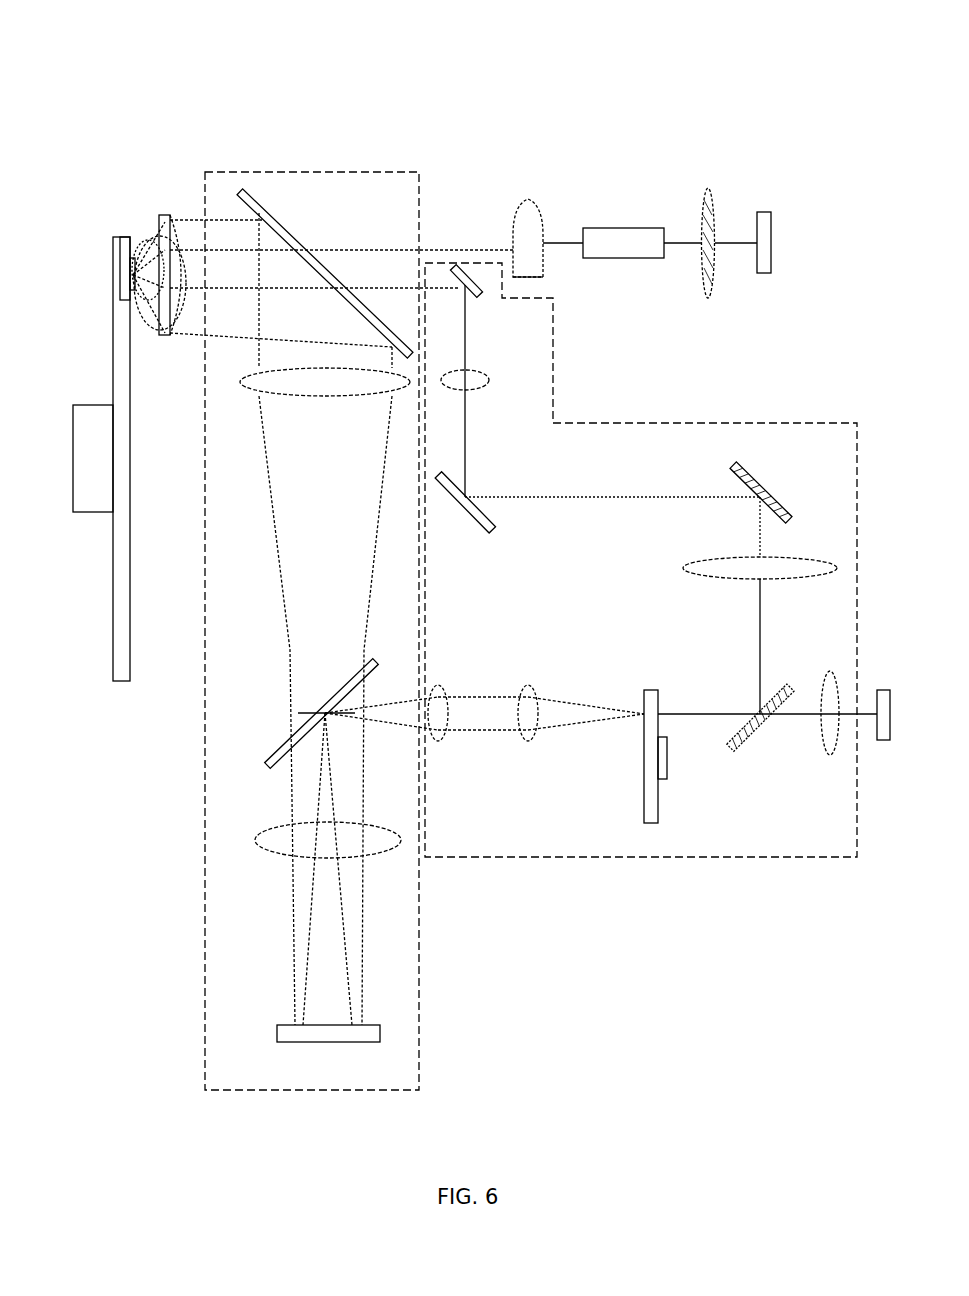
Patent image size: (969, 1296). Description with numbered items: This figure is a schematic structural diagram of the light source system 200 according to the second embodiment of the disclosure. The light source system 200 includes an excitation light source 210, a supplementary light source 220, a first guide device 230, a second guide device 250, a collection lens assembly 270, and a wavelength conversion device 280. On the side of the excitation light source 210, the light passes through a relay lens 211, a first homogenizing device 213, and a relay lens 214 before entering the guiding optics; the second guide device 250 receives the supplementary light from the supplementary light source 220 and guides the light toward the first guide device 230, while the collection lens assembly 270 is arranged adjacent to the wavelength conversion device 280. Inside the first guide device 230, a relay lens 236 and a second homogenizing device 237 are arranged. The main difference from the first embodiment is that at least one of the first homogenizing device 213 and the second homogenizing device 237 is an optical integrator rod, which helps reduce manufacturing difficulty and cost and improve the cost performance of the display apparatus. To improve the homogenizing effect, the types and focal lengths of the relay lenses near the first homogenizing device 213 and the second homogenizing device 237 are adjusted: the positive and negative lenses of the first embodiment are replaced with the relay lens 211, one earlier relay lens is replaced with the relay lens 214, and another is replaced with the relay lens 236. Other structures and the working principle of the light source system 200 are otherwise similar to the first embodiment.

The light source system 200 is at (431, 52).
The excitation light source 210 is at (767, 218).
The relay lens 211 is at (712, 213).
The first homogenizing device 213 is at (633, 240).
The relay lens 214 is at (523, 212).
The supplementary light source 220 is at (885, 693).
The first guide device 230 is at (419, 1002).
The relay lens 236 is at (265, 845).
The second homogenizing device 237 is at (287, 1033).
The second guide device 250 is at (725, 423).
The collection lens assembly 270 is at (167, 215).
The wavelength conversion device 280 is at (118, 356).